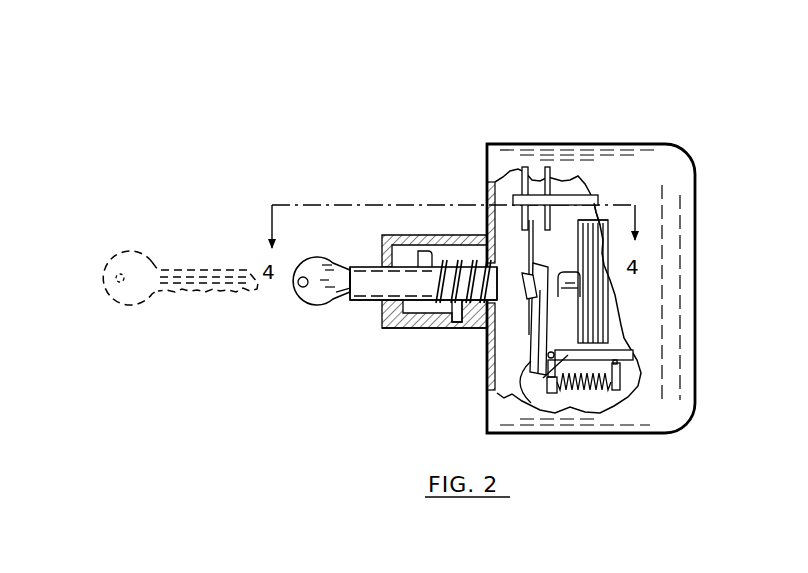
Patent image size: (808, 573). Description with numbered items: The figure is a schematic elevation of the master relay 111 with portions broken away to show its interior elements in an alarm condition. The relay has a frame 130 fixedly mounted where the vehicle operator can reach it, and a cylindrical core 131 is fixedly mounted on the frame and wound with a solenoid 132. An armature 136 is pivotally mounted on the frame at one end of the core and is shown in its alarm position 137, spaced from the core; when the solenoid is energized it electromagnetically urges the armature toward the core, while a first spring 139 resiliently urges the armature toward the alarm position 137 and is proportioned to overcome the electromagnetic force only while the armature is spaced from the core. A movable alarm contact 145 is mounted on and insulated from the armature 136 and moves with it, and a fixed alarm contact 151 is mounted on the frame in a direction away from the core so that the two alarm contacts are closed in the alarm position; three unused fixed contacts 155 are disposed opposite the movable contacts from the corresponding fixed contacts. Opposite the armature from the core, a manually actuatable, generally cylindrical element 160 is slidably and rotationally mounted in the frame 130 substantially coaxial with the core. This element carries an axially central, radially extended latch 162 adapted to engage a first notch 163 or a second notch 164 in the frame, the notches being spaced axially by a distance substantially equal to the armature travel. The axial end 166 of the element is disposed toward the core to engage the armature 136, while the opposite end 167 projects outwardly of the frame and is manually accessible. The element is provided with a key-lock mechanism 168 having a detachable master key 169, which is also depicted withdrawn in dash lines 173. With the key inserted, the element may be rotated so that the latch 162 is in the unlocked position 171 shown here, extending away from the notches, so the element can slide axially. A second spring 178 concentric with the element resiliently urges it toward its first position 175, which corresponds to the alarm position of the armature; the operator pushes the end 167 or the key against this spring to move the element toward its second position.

The master relay 111 is at (681, 122).
The movable alarm contact 145 is at (526, 232).
The fixed alarm contact 151 is at (522, 232).
The first position 175 is at (369, 263).
The unlocked position 171 is at (388, 248).
The latch 162 is at (417, 258).
The alarm position 137 is at (527, 250).
The unused fixed contacts 155 is at (582, 206).
The key-lock mechanism 168 is at (360, 260).
The solenoid 132 is at (596, 250).
The dash lines 173 is at (190, 296).
The master key 169 is at (308, 300).
The opposite end 167 is at (340, 289).
The manually actuatable cylindrical element 160 is at (366, 302).
The first notch 163 is at (412, 325).
The second spring 178 is at (452, 322).
The second notch 164 is at (462, 325).
The axial end 166 is at (497, 281).
The cylindrical core 131 is at (561, 282).
The armature 136 is at (547, 323).
The frame 130 is at (512, 389).
The first spring 139 is at (570, 387).